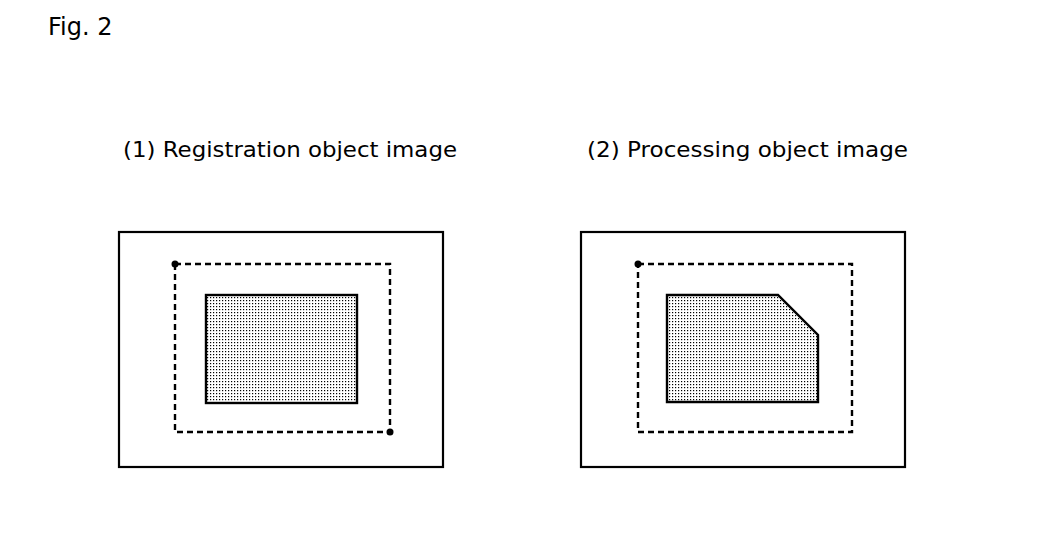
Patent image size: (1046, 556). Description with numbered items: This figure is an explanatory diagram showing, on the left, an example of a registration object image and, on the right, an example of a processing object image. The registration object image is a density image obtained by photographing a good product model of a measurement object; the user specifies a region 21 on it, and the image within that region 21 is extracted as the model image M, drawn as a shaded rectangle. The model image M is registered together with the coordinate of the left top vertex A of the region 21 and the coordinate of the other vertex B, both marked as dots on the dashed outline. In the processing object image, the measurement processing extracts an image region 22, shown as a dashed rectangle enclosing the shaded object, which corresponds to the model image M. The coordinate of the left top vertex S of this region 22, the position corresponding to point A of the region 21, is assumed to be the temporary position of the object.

The specified region 21 is at (238, 432).
The image region 22 is at (690, 432).
The model image M is at (193, 410).
The left top vertex A is at (247, 213).
The right top vertex B is at (406, 483).
The left top vertex of the image region S is at (712, 213).